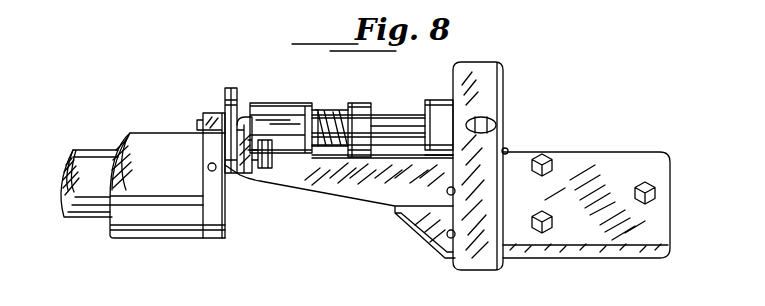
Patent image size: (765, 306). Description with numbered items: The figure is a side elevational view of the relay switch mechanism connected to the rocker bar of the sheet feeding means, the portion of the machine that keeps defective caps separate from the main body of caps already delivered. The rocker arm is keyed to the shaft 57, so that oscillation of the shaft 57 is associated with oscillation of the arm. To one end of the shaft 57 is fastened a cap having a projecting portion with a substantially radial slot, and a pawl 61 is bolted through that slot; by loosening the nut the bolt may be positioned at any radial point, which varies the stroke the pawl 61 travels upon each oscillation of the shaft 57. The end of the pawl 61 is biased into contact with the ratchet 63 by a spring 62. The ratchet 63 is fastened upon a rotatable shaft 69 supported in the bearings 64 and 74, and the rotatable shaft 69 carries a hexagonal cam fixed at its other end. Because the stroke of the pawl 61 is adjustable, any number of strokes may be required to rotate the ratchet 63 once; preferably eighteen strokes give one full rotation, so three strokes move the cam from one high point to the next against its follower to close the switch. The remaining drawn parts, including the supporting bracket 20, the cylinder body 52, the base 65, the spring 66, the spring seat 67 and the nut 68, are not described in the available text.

The angle bracket 20 is at (494, 88).
The cylinder 52 is at (225, 205).
The shaft 57 is at (76, 199).
The pawl 61 is at (237, 107).
The spring 62 is at (245, 112).
The ratchet 63 is at (232, 89).
The bearing 64 is at (298, 106).
The base plate 65 is at (340, 190).
The spring 66 is at (336, 116).
The spring seat 67 is at (315, 112).
The adjusting nut 68 is at (369, 106).
The rotatable shaft 69 is at (399, 114).
The bearing 74 is at (438, 100).